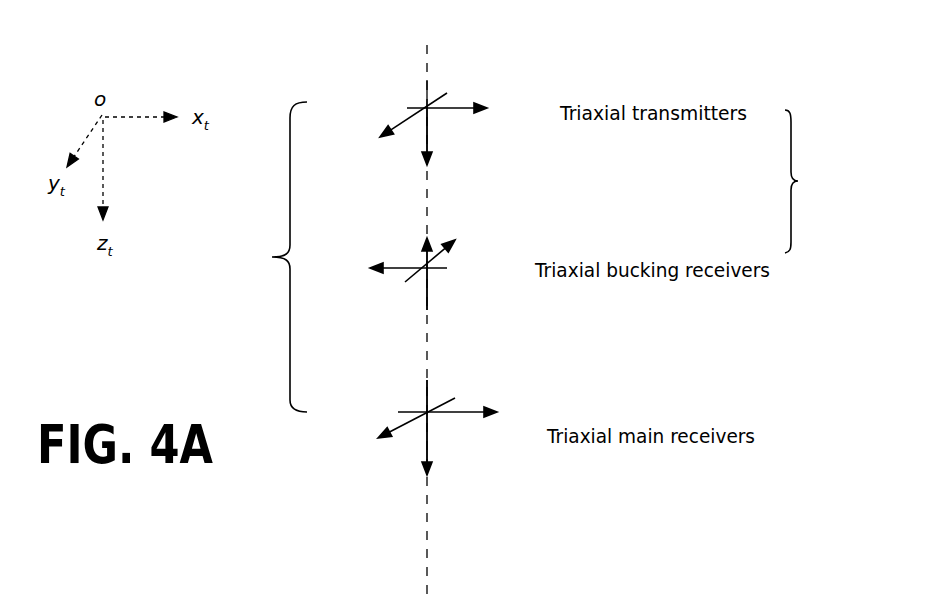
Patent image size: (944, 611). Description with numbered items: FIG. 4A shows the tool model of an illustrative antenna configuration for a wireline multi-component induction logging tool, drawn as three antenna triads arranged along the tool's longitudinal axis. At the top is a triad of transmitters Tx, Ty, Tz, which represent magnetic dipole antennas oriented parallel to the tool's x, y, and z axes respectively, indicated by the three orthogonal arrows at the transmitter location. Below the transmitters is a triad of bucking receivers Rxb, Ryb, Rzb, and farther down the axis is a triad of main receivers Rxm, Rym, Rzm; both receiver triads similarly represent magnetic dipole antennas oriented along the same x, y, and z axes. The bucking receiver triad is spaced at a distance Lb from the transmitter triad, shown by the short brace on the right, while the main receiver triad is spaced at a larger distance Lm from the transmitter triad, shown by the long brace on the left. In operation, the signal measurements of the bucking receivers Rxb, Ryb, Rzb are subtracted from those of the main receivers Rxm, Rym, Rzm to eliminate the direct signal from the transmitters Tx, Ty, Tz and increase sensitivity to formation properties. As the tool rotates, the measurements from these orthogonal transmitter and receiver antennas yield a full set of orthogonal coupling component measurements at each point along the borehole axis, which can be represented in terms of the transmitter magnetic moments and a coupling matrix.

The x-axis transmitter Tx is at (457, 88).
The y-axis transmitter Ty is at (392, 115).
The z-axis transmitter Tz is at (442, 137).
The x-axis bucking receiver Rxb is at (390, 280).
The y-axis bucking receiver Ryb is at (445, 248).
The z-axis bucking receiver Rzb is at (411, 262).
The x-axis main receiver Rxm is at (455, 396).
The y-axis main receiver Rym is at (390, 426).
The z-axis main receiver Rzm is at (445, 437).
The main receiver spacing Lm is at (264, 257).
The bucking receiver spacing Lb is at (807, 181).